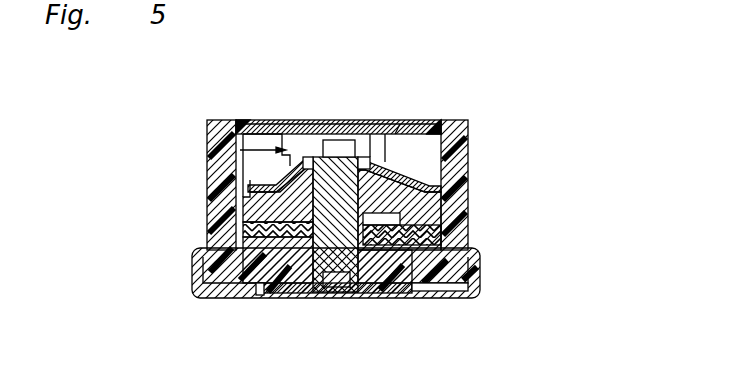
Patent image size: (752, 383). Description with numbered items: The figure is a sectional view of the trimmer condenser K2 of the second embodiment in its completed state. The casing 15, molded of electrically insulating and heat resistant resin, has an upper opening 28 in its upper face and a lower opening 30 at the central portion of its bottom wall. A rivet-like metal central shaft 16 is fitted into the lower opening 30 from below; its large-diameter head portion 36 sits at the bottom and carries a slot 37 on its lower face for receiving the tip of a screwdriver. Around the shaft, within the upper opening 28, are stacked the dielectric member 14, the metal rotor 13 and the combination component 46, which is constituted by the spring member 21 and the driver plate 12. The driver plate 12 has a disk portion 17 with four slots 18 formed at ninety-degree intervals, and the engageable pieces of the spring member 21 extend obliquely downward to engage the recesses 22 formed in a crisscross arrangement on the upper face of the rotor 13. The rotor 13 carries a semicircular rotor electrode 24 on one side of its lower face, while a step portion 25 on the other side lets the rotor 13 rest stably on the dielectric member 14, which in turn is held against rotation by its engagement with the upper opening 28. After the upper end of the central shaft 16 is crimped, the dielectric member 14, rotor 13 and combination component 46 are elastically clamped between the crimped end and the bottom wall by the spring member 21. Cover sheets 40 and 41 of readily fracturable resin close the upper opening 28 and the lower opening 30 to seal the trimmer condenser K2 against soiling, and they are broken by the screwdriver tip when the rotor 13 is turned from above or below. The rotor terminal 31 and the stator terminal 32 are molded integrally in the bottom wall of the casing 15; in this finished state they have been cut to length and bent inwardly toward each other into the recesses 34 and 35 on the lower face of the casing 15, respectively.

The driver plate 12 is at (207, 124).
The rotor 13 is at (418, 150).
The dielectric member 14 is at (207, 234).
The casing 15 is at (472, 199).
The central shaft 16 is at (349, 119).
The disk portion 17 is at (253, 119).
The slots 18 is at (399, 119).
The spring member 21 is at (272, 180).
The recesses 22 is at (432, 176).
The rotor electrode 24 is at (207, 210).
The step portion 25 is at (446, 225).
The upper opening 28 is at (430, 120).
The lower opening 30 is at (295, 293).
The rotor terminal 31 is at (473, 277).
The stator terminal 32 is at (196, 282).
The recess 34 is at (410, 294).
The recess 35 is at (258, 297).
The head portion 36 is at (372, 293).
The slot 37 is at (346, 293).
The cover sheet 40 is at (296, 120).
The cover sheet 41 is at (331, 288).
The combination component 46 is at (122, 96).
The trimmer condenser K2 is at (508, 100).